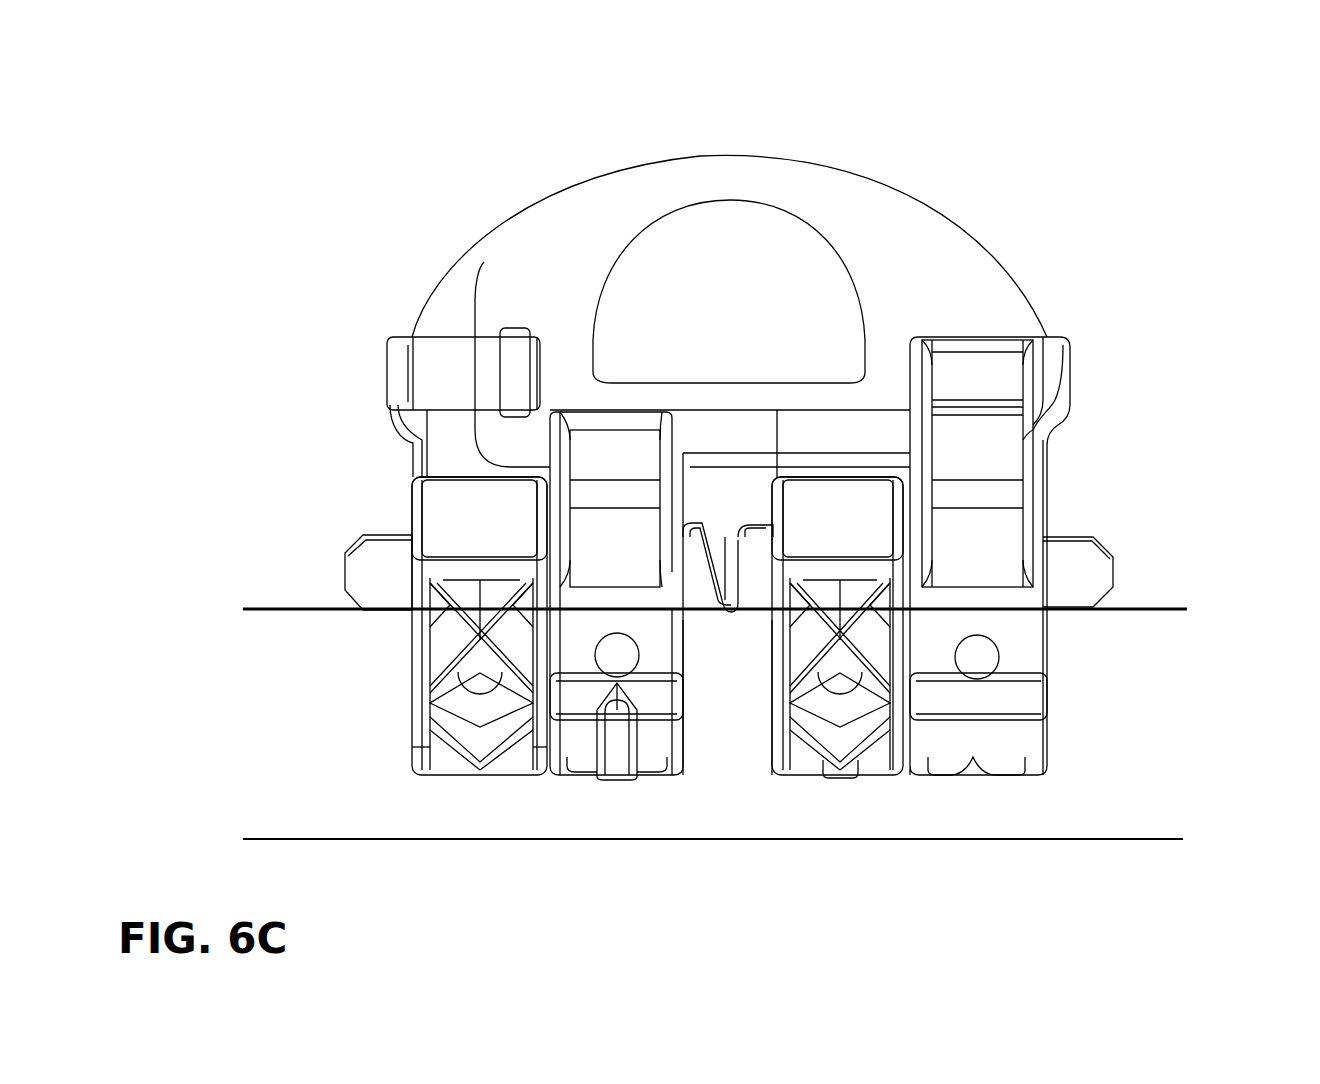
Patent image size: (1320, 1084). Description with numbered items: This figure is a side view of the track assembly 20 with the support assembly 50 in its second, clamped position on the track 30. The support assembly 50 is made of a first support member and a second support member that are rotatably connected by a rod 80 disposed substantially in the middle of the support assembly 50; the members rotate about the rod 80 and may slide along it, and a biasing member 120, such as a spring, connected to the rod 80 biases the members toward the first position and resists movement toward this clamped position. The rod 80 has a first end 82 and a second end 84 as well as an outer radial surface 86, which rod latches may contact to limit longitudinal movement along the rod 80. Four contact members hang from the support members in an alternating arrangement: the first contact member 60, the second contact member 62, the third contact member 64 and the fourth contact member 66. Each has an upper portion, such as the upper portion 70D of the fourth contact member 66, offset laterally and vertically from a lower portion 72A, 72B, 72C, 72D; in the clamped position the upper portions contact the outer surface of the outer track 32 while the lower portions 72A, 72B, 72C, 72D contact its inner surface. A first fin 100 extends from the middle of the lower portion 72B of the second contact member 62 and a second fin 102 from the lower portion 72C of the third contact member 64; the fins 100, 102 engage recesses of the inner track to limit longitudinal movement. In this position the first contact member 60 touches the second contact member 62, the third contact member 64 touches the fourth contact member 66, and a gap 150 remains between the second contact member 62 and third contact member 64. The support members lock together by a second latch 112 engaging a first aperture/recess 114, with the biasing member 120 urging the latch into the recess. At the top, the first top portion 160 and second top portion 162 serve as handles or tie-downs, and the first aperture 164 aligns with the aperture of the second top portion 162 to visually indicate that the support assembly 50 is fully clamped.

The track assembly 20 is at (988, 134).
The track 30 is at (766, 668).
The outer track 32 is at (1130, 614).
The support assembly 50 is at (853, 156).
The first contact member 60 is at (1041, 627).
The second contact member 62 is at (816, 698).
The third contact member 64 is at (627, 659).
The fourth contact member 66 is at (423, 668).
The upper portion 70D is at (452, 507).
The lower portion 72A is at (1017, 698).
The lower portion 72B is at (785, 717).
The lower portion 72C is at (683, 705).
The lower portion 72D is at (418, 706).
The rod 80 is at (1077, 520).
The first end 82 is at (1115, 573).
The second end 84 is at (345, 568).
The outer radial surface 86 is at (1072, 585).
The first fin 100 is at (840, 772).
The second fin 102 is at (620, 768).
The second latch 112 is at (462, 357).
The first aperture/recess 114 is at (515, 325).
The biasing member 120 is at (740, 520).
The gap 150 is at (717, 742).
The first top portion 160 is at (968, 238).
The second top portion 162 is at (730, 271).
The first aperture 164 is at (716, 258).